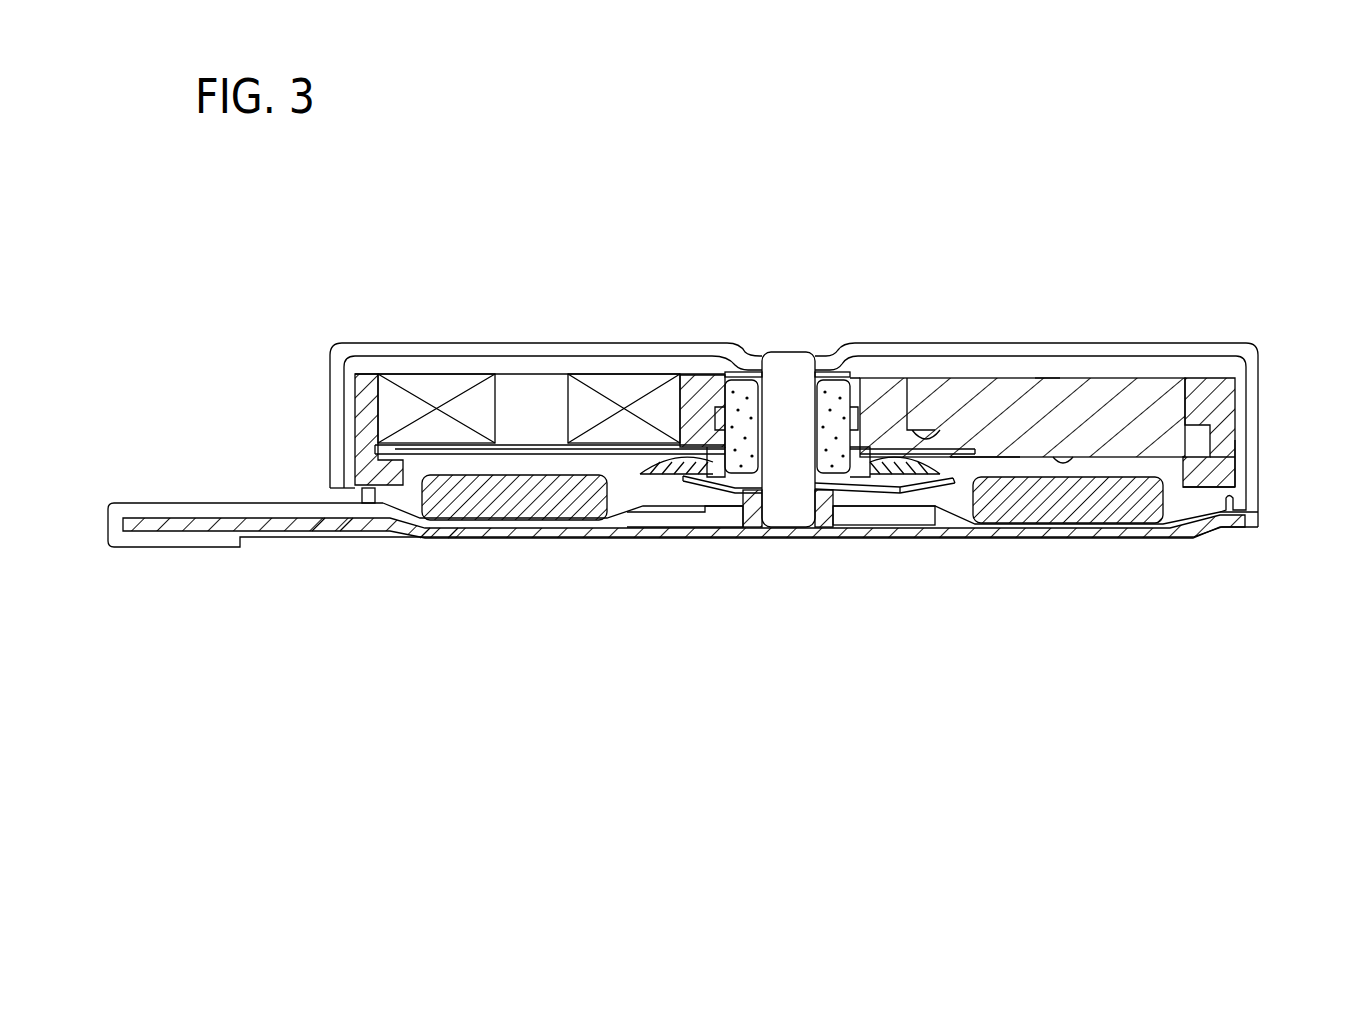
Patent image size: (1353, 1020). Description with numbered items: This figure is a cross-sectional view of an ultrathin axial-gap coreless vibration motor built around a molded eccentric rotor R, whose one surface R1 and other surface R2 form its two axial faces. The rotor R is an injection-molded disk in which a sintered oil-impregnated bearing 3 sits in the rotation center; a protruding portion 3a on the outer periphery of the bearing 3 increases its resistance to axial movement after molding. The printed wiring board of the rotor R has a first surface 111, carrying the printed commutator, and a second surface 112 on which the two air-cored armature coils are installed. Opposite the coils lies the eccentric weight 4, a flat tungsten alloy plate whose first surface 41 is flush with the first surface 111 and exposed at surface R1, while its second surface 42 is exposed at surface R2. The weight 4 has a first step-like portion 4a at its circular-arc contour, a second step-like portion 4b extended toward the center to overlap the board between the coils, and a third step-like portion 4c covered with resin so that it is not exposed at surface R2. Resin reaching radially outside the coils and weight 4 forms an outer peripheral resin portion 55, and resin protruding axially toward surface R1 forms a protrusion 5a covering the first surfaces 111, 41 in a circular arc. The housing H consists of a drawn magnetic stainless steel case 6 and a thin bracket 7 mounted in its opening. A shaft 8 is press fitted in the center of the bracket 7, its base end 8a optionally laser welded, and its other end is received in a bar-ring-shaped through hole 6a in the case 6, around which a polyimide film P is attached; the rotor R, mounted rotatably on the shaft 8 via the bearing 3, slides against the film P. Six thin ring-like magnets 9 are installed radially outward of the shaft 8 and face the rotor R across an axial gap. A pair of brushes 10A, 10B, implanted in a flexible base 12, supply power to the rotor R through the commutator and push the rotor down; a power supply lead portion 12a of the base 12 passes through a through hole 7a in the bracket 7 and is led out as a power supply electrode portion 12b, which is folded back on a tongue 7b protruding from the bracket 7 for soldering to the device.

The eccentric rotor R is at (373, 372).
The one surface of the rotor R1 is at (482, 462).
The other surface of the rotor R2 is at (500, 455).
The first surface of the printed wiring board 111 is at (582, 455).
The second surface of the printed wiring board 112 is at (535, 447).
The sintered oil-impregnated bearing 3 is at (713, 432).
The protruding portion 3a is at (858, 405).
The polyimide film P is at (735, 372).
The shaft 8 is at (785, 390).
The base end of the shaft 8a is at (800, 528).
The case 6 is at (1030, 356).
The through hole 6a is at (784, 350).
The eccentric weight 4 is at (1113, 432).
The first step-like portion 4a is at (1192, 420).
The second step-like portion 4b is at (997, 445).
The third step-like portion 4c is at (945, 435).
The first surface of the weight 41 is at (1063, 447).
The second surface of the weight 42 is at (1047, 378).
The bracket 7 is at (1215, 530).
The through hole 7a is at (415, 540).
The tongue 7b is at (325, 540).
The flexible base 12 is at (872, 525).
The power supply lead portion 12a is at (613, 520).
The power supply electrode portion 12b is at (188, 548).
The brush 10A is at (700, 486).
The brush 10B is at (960, 483).
The housing H is at (826, 527).
The ring-like magnets 9 is at (1062, 495).
The protrusion 5a is at (1203, 478).
The outer peripheral resin portion 55 is at (1230, 453).